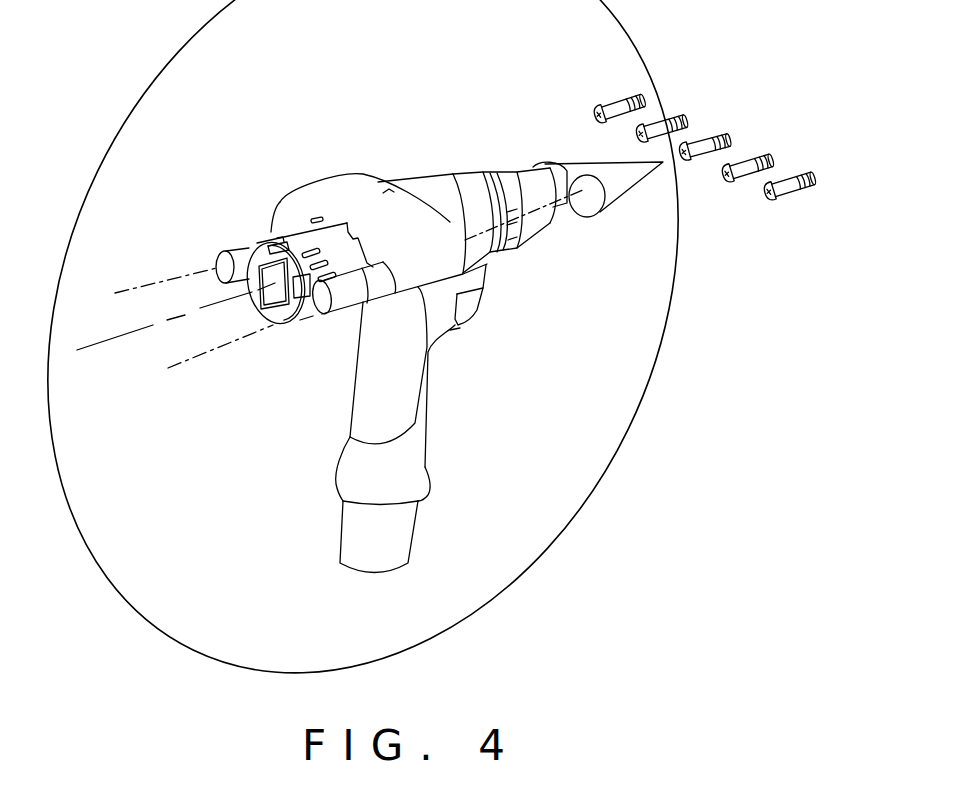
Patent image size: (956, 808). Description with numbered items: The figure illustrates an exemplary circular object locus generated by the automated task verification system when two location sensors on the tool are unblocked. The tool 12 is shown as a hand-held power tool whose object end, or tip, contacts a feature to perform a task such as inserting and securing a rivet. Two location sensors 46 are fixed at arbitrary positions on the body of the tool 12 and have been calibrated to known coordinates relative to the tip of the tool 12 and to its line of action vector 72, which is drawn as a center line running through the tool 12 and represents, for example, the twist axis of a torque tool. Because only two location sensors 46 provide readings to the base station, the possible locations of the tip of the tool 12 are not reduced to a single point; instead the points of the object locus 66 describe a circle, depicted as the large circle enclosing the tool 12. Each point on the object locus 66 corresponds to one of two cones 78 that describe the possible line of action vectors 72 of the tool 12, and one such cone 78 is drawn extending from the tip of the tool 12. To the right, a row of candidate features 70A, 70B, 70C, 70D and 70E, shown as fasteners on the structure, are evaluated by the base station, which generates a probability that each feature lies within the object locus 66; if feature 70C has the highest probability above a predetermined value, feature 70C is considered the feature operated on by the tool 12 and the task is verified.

The tool 12 is at (407, 478).
The location sensors 46 is at (217, 263).
The object locus 66 is at (99, 567).
The feature 70A is at (813, 182).
The feature 70B is at (775, 159).
The feature 70C is at (730, 139).
The feature 70D is at (690, 119).
The feature 70E is at (648, 100).
The line of action vector 72 is at (125, 336).
The cones 78 is at (567, 168).